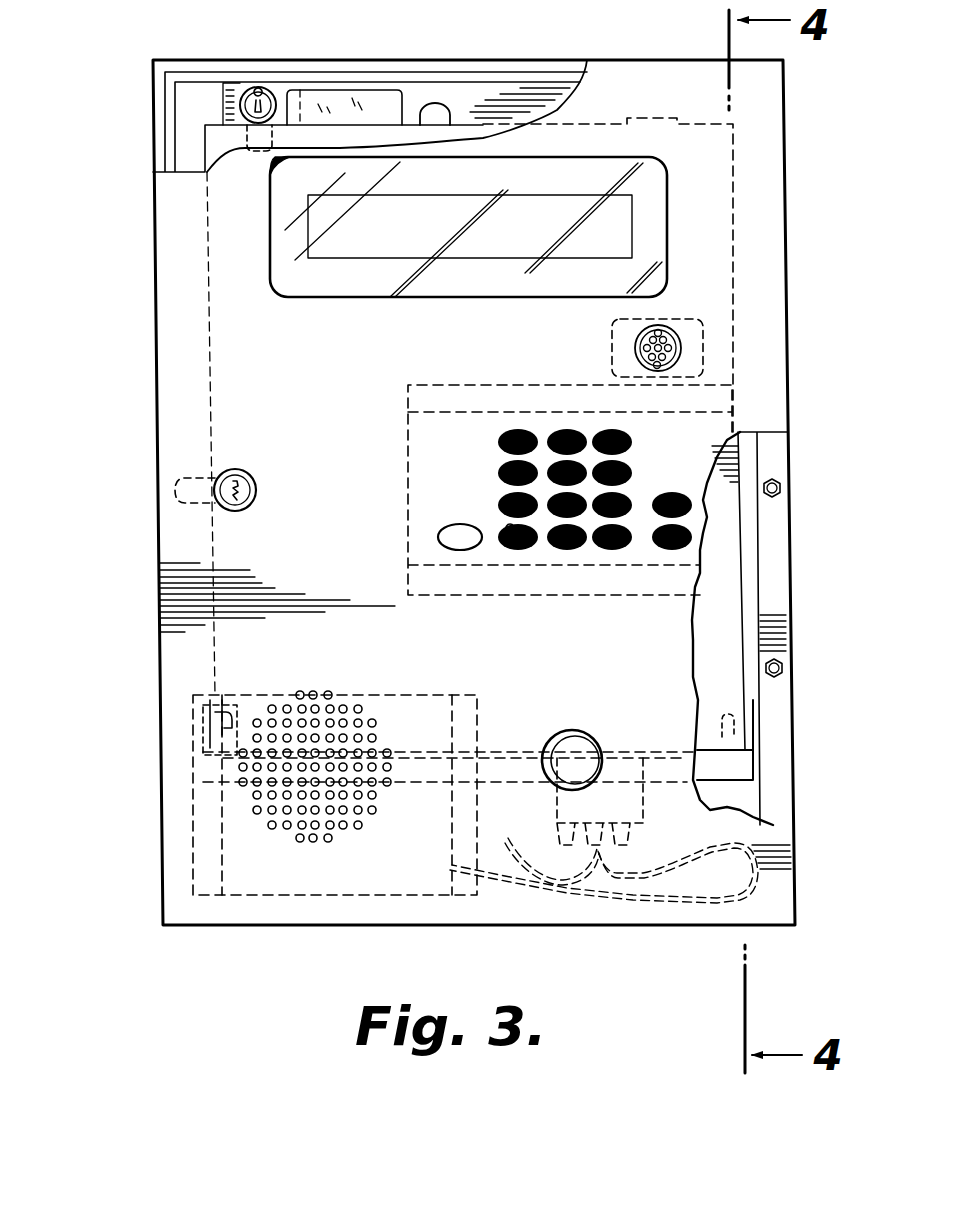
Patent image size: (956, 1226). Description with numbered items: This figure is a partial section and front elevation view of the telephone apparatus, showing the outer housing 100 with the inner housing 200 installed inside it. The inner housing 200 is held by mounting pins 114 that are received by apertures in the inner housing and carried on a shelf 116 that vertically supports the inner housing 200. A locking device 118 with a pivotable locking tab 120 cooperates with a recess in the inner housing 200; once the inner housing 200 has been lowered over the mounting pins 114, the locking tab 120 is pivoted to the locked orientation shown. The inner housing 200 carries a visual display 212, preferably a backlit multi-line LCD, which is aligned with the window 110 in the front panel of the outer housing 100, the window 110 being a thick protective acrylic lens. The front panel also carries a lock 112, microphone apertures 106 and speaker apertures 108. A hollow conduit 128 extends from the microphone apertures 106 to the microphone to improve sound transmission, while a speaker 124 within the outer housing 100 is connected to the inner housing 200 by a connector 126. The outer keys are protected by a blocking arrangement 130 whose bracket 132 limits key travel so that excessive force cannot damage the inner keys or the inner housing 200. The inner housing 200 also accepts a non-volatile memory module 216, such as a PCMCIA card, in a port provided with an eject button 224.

The outer housing 100 is at (180, 357).
The inner housing 200 is at (203, 140).
The locking device 118 is at (230, 90).
The non-volatile RAM memory module 216 is at (382, 103).
The eject button 224 is at (450, 110).
The pivotable locking tab 120 is at (257, 153).
The visual display 212 is at (630, 207).
The window 110 is at (655, 240).
The hollow conduit 128 is at (636, 345).
The microphone apertures 106 is at (682, 356).
The lock 112 is at (235, 512).
The blocking arrangement 130 is at (702, 519).
The bracket 132 is at (592, 583).
The mounting pins 114 is at (232, 740).
The shelf 116 is at (717, 757).
The speaker 124 is at (210, 845).
The speaker apertures 108 is at (287, 838).
The connector 126 is at (635, 802).